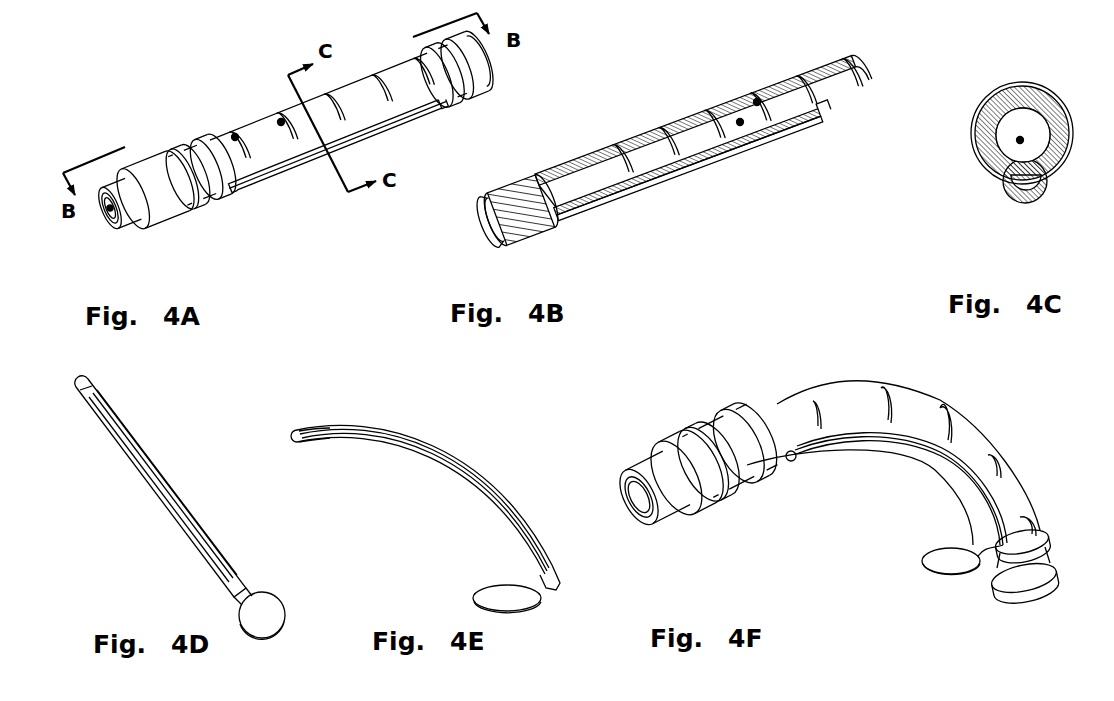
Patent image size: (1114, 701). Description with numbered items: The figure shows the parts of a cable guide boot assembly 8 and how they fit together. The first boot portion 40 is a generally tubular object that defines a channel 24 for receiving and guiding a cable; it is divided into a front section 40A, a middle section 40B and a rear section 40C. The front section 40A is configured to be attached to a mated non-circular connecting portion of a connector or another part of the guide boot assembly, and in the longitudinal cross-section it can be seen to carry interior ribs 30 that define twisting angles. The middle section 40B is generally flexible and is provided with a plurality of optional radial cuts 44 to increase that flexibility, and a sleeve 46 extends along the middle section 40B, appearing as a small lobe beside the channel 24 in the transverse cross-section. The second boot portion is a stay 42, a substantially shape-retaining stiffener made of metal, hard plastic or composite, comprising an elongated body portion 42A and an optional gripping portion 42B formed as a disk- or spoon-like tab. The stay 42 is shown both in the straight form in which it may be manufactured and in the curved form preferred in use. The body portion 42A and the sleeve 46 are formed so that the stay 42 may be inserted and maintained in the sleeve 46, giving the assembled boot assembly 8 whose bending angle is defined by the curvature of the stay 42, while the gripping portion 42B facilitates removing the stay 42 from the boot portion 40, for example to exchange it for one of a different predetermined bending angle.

In FIG. 4F, the boot assembly 8 is at (834, 495).
In FIG. 4A, the channel 24 is at (111, 210).
In FIG. 4B, the channel 24 is at (741, 123).
In FIG. 4C, the channel 24 is at (1018, 141).
In FIG. 4B, the interior ribs 30 is at (553, 222).
In FIG. 4B, the first boot portion 40 is at (673, 105).
In FIG. 4C, the first boot portion 40 is at (989, 94).
In FIG. 4F, the first boot portion 40 is at (787, 436).
In FIG. 4A, the front section 40A is at (156, 219).
In FIG. 4A, the middle section 40B is at (291, 170).
In FIG. 4A, the rear section 40C is at (467, 89).
In FIG. 4D, the stay 42 is at (205, 508).
In FIG. 4E, the stay 42 is at (425, 518).
In FIG. 4F, the stay 42 is at (950, 560).
In FIG. 4D, the elongated body portion 42A is at (168, 477).
In FIG. 4E, the elongated body portion 42A is at (435, 458).
In FIG. 4D, the gripping portion 42B is at (263, 607).
In FIG. 4E, the gripping portion 42B is at (500, 593).
In FIG. 4A, the radial cuts 44 is at (235, 136).
In FIG. 4B, the radial cuts 44 is at (756, 101).
In FIG. 4A, the sleeve 46 is at (238, 184).
In FIG. 4B, the sleeve 46 is at (704, 163).
In FIG. 4C, the sleeve 46 is at (1022, 185).